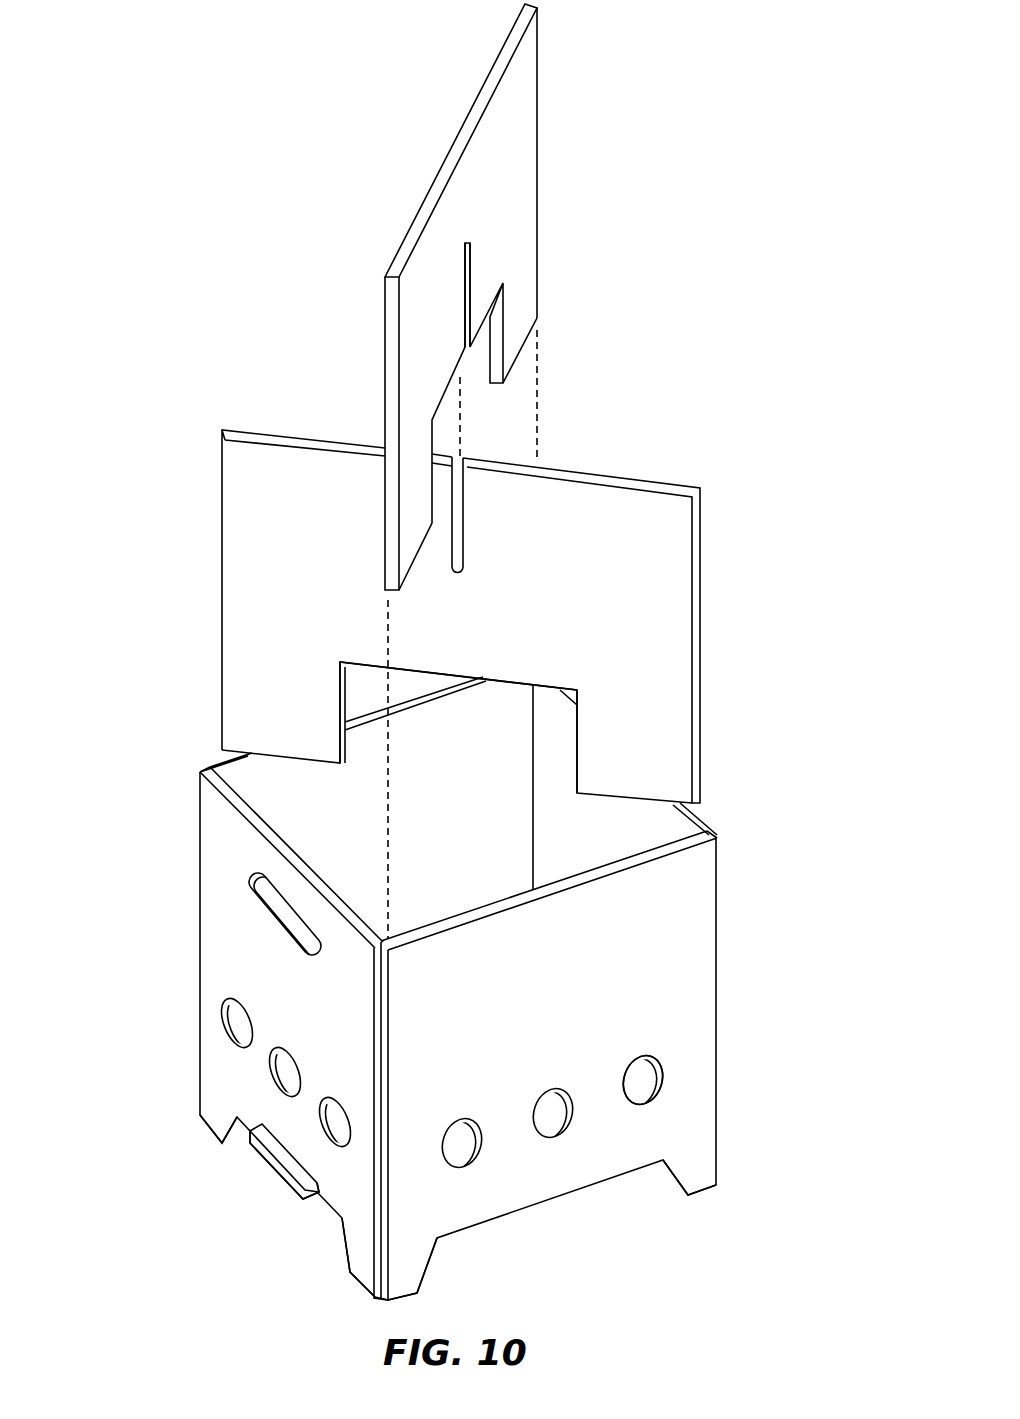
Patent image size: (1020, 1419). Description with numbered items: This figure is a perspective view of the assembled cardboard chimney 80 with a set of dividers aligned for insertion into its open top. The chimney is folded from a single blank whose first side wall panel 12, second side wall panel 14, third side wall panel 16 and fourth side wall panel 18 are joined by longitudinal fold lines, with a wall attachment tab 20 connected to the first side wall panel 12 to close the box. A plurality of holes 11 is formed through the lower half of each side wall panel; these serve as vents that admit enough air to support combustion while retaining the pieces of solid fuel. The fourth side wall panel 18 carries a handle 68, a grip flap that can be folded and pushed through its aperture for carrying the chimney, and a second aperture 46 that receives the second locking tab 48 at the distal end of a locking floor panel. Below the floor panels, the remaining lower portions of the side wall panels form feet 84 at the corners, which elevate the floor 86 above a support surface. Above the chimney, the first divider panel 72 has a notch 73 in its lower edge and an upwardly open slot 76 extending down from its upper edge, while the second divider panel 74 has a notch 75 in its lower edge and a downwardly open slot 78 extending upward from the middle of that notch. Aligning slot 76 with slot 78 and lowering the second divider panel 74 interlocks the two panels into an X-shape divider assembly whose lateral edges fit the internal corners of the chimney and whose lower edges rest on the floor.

The assembled cardboard chimney 80 is at (148, 810).
The first side wall panel 12 is at (718, 937).
The fourth side wall panel 18 is at (200, 918).
The second side wall panel 14 is at (718, 836).
The third side wall panel 16 is at (203, 772).
The wall attachment tab 20 is at (380, 940).
The holes 11 is at (237, 1003).
The handle 68 is at (320, 958).
The second aperture 46 is at (315, 1185).
The second locking tab 48 is at (268, 1152).
The feet 84 is at (215, 1120).
The floor 86 is at (632, 1092).
The first divider panel 72 is at (222, 523).
The notch 73 is at (442, 748).
The second divider panel 74 is at (398, 250).
The notch 75 is at (486, 400).
The upwardly open slot 76 is at (465, 538).
The downwardly open slot 78 is at (472, 283).